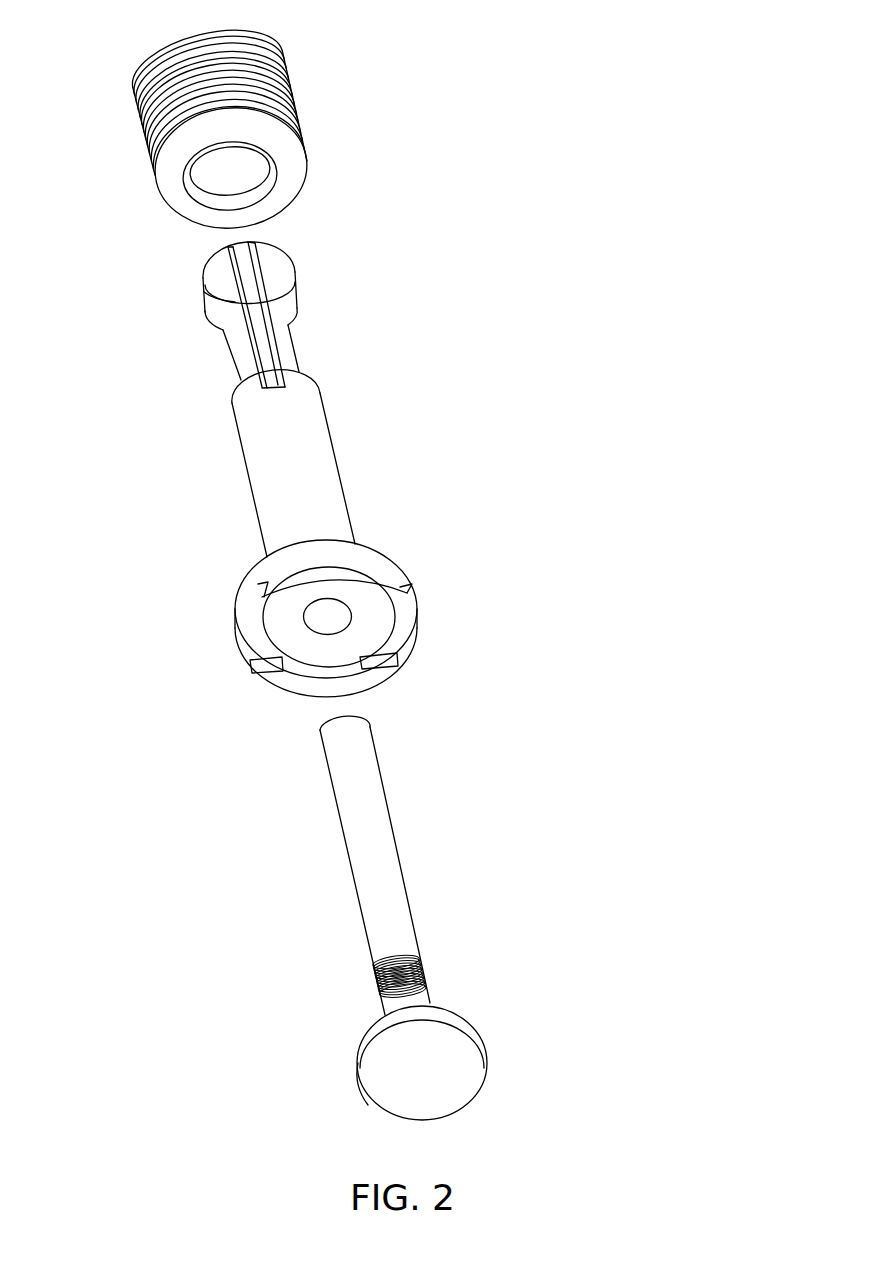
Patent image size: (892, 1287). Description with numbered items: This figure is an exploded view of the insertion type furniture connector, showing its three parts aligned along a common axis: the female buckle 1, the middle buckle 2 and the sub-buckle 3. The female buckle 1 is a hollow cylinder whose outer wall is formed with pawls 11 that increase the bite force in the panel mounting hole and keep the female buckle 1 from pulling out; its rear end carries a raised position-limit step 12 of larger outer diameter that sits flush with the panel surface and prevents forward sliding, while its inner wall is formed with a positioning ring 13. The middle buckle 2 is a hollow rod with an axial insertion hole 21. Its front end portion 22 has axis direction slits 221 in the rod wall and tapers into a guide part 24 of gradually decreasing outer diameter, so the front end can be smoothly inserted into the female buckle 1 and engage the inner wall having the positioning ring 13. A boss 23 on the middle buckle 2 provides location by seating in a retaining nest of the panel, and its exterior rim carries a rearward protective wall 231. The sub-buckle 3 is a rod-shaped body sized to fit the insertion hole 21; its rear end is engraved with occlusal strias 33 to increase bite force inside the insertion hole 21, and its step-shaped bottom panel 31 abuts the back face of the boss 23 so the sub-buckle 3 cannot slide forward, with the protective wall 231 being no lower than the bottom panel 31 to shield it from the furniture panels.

The female buckle 1 is at (294, 138).
The pawls 11 is at (263, 82).
The position-limit step 12 is at (293, 165).
The positioning ring 13 is at (255, 192).
The middle buckle 2 is at (298, 449).
The insertion hole 21 is at (338, 618).
The front end portion 22 is at (283, 269).
The axis direction slits 221 is at (231, 248).
The boss 23 is at (236, 601).
The protective wall 231 is at (378, 562).
The guide part 24 is at (213, 259).
The sub-buckle 3 is at (377, 856).
The bottom panel 31 is at (468, 1024).
The occlusal strias 33 is at (422, 972).